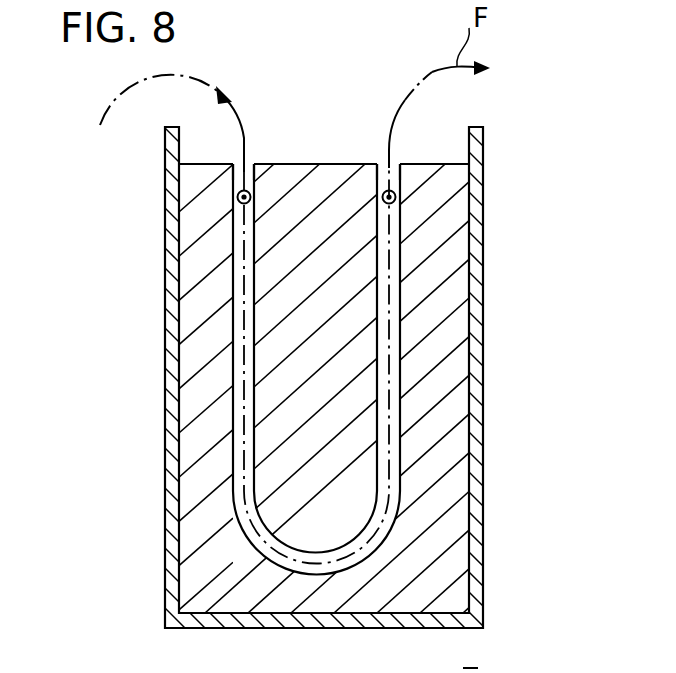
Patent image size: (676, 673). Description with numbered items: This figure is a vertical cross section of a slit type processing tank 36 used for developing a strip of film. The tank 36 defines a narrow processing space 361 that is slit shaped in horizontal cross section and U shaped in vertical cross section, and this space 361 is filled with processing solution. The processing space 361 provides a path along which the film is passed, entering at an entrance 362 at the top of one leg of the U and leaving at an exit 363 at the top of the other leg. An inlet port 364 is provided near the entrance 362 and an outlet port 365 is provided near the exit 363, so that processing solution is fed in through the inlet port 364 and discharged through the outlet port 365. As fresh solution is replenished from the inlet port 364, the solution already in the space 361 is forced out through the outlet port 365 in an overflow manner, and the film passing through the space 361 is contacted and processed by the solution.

The processing tank 36 is at (490, 594).
The processing space 361 is at (333, 566).
The entrance 362 is at (250, 165).
The exit 363 is at (383, 167).
The inlet port 364 is at (238, 200).
The outlet port 365 is at (396, 200).